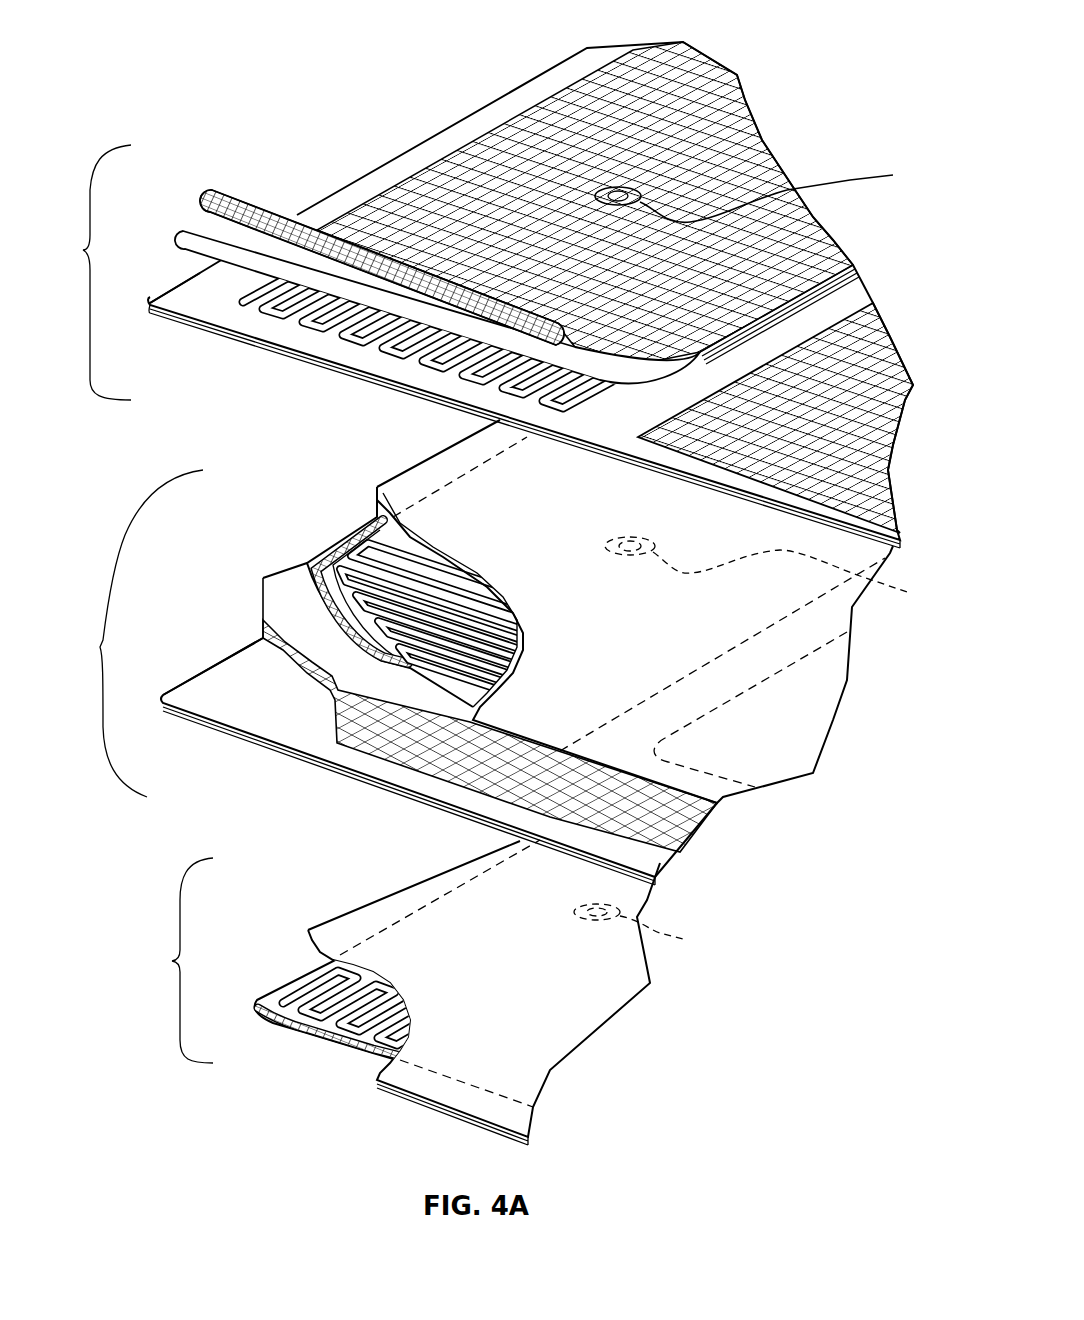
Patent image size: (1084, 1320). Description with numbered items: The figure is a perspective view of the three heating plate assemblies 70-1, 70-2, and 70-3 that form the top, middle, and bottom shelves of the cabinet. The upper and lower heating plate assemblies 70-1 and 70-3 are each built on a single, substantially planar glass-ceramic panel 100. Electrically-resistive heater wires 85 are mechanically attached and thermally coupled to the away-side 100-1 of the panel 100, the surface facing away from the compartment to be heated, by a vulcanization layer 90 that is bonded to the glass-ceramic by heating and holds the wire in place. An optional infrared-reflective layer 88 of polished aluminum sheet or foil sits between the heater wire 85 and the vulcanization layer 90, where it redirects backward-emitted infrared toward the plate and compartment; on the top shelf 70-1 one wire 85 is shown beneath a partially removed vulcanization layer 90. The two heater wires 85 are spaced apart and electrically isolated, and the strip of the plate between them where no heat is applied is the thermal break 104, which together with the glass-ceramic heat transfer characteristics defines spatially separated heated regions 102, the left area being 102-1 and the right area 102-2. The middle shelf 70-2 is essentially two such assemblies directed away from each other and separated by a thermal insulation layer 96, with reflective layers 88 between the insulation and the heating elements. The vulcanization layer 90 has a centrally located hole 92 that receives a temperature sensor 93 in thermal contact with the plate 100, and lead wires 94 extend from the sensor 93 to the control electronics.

The top heating plate assembly 70-1 is at (83, 250).
The middle heating plate assembly 70-2 is at (100, 647).
The bottom heating plate assembly 70-3 is at (172, 961).
The heater wire 85 is at (248, 300).
The infrared-reflective layer 88 is at (197, 240).
The vulcanization layer 90 is at (210, 197).
The hole 92 is at (748, 90).
The temperature sensor 93 is at (630, 186).
The lead wires 94 is at (893, 175).
The thermal insulation layer 96 is at (263, 620).
The glass-ceramic panel 100 is at (153, 313).
The away-side surface 100-1 is at (217, 297).
The heated region 102 is at (547, 1010).
The first heating area 102-1 is at (720, 62).
The second heating area 102-2 is at (907, 320).
The thermal break 104 is at (840, 287).